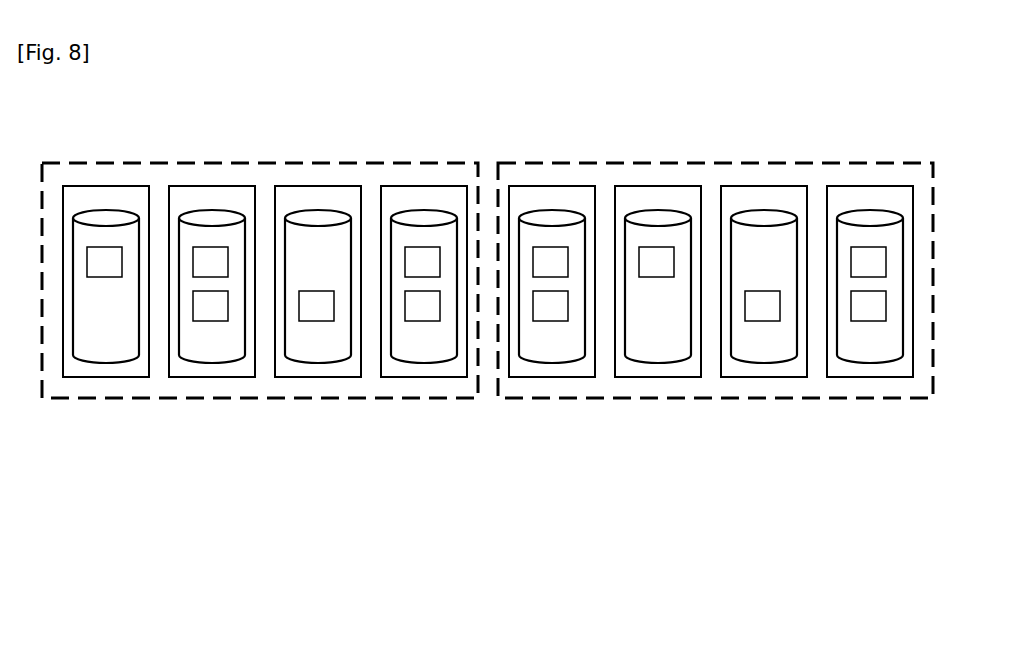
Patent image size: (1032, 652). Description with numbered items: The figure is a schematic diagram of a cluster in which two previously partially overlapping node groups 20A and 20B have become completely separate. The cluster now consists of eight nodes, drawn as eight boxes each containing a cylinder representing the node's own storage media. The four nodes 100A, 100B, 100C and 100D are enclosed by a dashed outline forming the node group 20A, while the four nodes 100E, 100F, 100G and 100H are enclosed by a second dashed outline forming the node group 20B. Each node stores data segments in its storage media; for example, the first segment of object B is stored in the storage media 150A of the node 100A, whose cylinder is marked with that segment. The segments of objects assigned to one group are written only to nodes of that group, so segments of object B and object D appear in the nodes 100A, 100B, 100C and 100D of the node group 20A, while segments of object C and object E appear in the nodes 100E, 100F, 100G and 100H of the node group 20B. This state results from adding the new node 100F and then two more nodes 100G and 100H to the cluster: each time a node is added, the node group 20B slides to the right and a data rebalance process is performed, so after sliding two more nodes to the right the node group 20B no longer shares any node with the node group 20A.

The node 100A is at (112, 276).
The node 100B is at (208, 188).
The node 100C is at (314, 188).
The node 100D is at (418, 188).
The node 100E is at (546, 188).
The node 100F is at (649, 188).
The node 100G is at (758, 188).
The node 100H is at (850, 188).
The storage media 150A is at (108, 355).
The node group 20A is at (263, 400).
The node group 20B is at (717, 397).